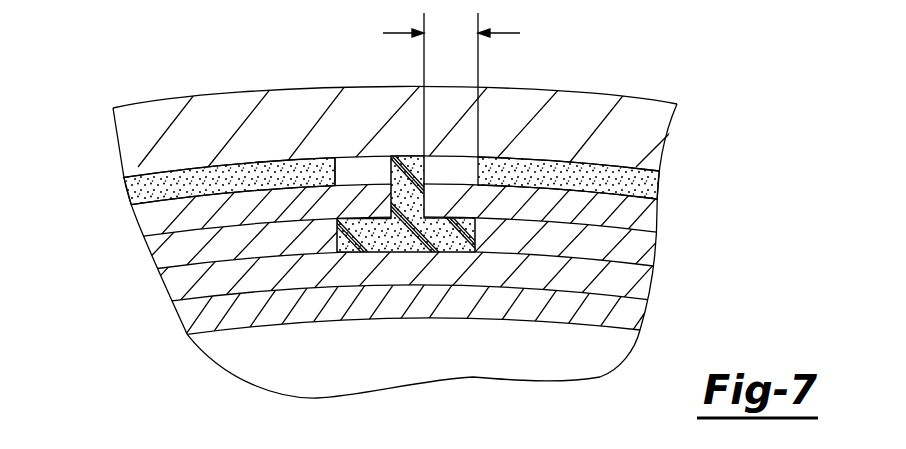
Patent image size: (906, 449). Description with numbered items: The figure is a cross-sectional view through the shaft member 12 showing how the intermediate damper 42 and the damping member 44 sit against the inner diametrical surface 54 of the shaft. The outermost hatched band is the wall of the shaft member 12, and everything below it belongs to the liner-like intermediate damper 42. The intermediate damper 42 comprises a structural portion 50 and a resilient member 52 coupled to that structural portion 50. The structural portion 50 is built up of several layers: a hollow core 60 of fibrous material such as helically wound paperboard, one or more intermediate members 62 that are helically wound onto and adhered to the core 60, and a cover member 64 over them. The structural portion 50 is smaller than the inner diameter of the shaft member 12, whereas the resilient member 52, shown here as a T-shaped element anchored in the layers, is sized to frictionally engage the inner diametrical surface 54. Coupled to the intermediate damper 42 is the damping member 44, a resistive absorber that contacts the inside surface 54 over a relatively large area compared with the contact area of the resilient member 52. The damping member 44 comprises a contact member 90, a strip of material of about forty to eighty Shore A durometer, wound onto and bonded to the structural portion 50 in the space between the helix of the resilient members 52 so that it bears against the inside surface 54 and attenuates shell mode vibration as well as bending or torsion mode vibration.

The shaft member 12 is at (140, 135).
The contact member 90 is at (207, 173).
The resilient member 52 is at (410, 168).
The inner diametrical surface 54 is at (545, 164).
The intermediate damper 42 is at (416, 270).
The cover member 64 is at (645, 221).
The intermediate member 62 is at (650, 258).
The hollow core 60 is at (185, 315).
The damping member 44 is at (383, 146).
The structural portion 50 is at (178, 290).